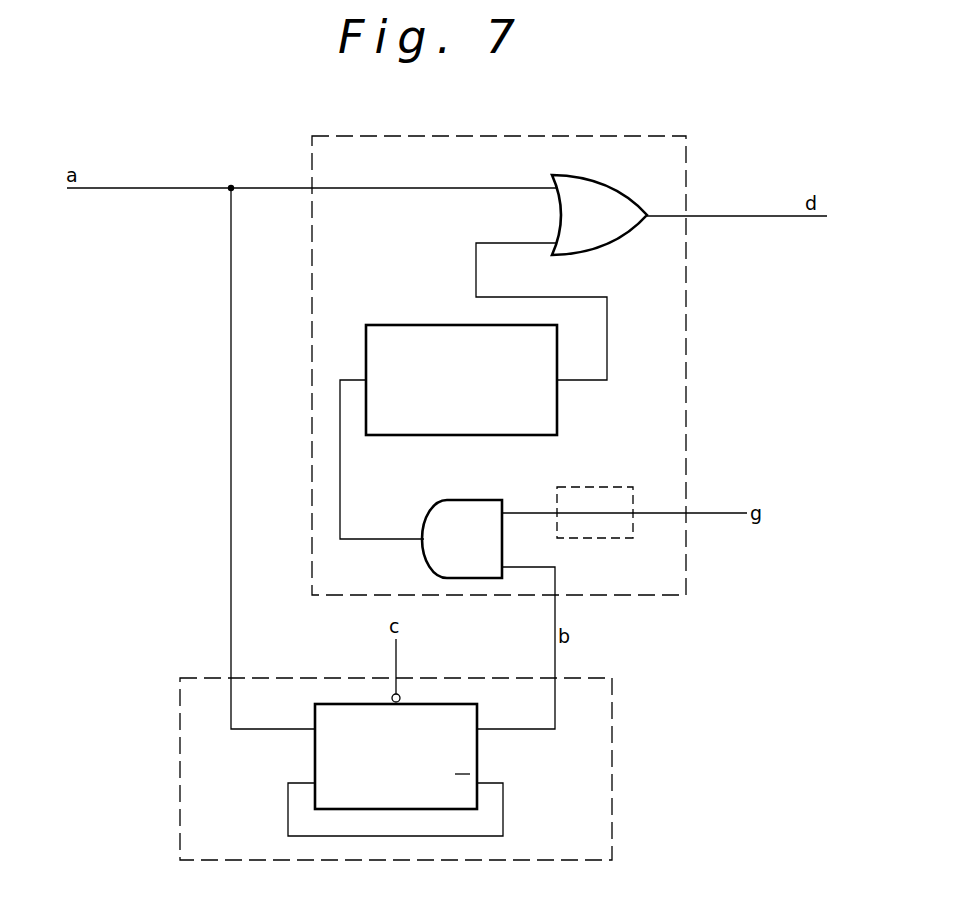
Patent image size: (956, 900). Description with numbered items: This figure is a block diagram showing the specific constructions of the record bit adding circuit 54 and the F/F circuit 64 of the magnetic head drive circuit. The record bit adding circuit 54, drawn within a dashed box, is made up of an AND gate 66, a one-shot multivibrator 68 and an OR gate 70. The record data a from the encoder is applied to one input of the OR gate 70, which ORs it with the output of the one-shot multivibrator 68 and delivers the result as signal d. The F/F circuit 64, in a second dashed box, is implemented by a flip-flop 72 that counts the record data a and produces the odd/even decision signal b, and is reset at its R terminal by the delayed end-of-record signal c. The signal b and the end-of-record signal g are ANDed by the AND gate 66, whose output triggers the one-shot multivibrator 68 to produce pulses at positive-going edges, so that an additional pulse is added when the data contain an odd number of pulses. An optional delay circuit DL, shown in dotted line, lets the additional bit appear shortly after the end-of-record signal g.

The record bit adding circuit 54 is at (548, 132).
The OR gate 70 is at (610, 185).
The one-shot multivibrator 68 is at (413, 325).
The AND gate 66 is at (482, 500).
The delay circuit DL is at (615, 483).
The F/F circuit 64 is at (612, 760).
The flip-flop 72 is at (315, 752).